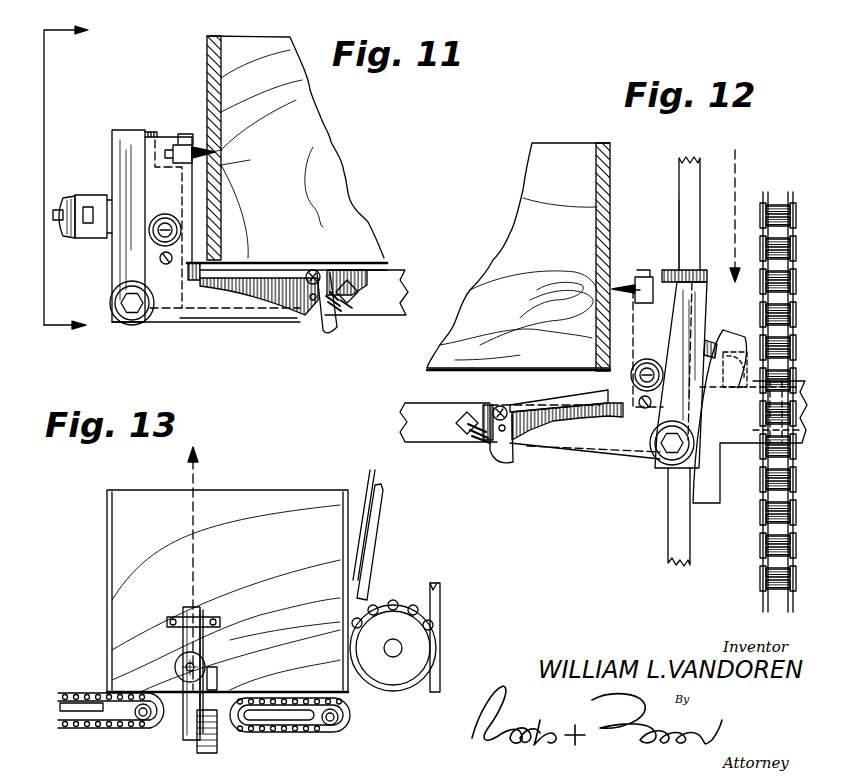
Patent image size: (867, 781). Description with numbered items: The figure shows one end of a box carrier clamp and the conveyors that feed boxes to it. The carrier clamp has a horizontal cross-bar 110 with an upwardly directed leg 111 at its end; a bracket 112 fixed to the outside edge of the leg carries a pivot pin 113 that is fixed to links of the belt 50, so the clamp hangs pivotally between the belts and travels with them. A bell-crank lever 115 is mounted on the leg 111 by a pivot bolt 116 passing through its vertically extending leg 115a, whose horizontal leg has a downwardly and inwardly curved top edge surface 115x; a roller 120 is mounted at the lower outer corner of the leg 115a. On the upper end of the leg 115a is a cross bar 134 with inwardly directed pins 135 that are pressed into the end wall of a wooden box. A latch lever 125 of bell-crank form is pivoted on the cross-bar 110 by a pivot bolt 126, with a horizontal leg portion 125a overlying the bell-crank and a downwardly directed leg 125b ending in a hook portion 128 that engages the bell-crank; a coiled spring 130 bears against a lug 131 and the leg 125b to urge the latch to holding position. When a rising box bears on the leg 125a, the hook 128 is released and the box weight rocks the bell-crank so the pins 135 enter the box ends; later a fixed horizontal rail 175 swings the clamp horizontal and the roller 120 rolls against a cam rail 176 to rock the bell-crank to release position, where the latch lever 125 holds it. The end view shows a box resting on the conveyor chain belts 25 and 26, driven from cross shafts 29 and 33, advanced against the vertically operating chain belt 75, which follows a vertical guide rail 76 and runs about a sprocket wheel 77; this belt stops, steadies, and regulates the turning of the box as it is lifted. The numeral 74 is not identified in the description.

In FIG. 13, the conveyor chain belt 25 is at (63, 695).
In FIG. 13, the conveyor chain belt 26 is at (305, 733).
In FIG. 13, the cross shaft 29 is at (147, 729).
In FIG. 13, the cross shaft 33 is at (348, 721).
In FIG. 12, the belt 50 is at (778, 207).
In FIG. 13, the disc 74 is at (408, 650).
In FIG. 13, the vertically operating chain belt 75 is at (358, 548).
In FIG. 13, the vertical guide rail 76 is at (378, 524).
In FIG. 13, the sprocket wheel 77 is at (393, 622).
In FIG. 11, the horizontal cross-bar 110 is at (408, 300).
In FIG. 12, the horizontal cross-bar 110 is at (428, 444).
In FIG. 11, the upwardly directed leg 111 is at (112, 148).
In FIG. 12, the upwardly directed leg 111 is at (698, 304).
In FIG. 13, the upwardly directed leg 111 is at (193, 673).
In FIG. 11, the bracket 112 is at (102, 237).
In FIG. 13, the bracket 112 is at (183, 640).
In FIG. 11, the pivot pin 113 is at (53, 210).
In FIG. 13, the pivot pin 113 is at (178, 668).
In FIG. 11, the bell-crank lever 115 is at (175, 285).
In FIG. 11, the vertically extending leg 115a is at (225, 165).
In FIG. 11, the curved top edge surface 115x is at (246, 296).
In FIG. 12, the curved top edge surface 115x is at (567, 447).
In FIG. 12, the pivot bolt 116 is at (597, 352).
In FIG. 11, the roller 120 is at (130, 322).
In FIG. 12, the roller 120 is at (658, 466).
In FIG. 13, the roller 120 is at (217, 750).
In FIG. 11, the latch lever 125 is at (298, 268).
In FIG. 12, the latch lever 125 is at (510, 402).
In FIG. 11, the horizontal leg portion 125a is at (230, 268).
In FIG. 11, the downwardly directed leg 125b is at (305, 318).
In FIG. 11, the pivot bolt 126 is at (318, 272).
In FIG. 12, the pivot bolt 126 is at (500, 413).
In FIG. 11, the hook portion 128 is at (318, 332).
In FIG. 12, the hook portion 128 is at (505, 461).
In FIG. 11, the coiled spring 130 is at (352, 308).
In FIG. 12, the coiled spring 130 is at (472, 447).
In FIG. 11, the lug 131 is at (358, 290).
In FIG. 12, the lug 131 is at (462, 415).
In FIG. 11, the cross bar 134 is at (180, 145).
In FIG. 12, the cross bar 134 is at (641, 272).
In FIG. 13, the cross bar 134 is at (216, 616).
In FIG. 11, the pin 135 is at (218, 150).
In FIG. 12, the pin 135 is at (593, 256).
In FIG. 13, the pin 135 is at (225, 621).
In FIG. 12, the horizontal rail 175 is at (680, 182).
In FIG. 12, the cam rail 176 is at (712, 412).